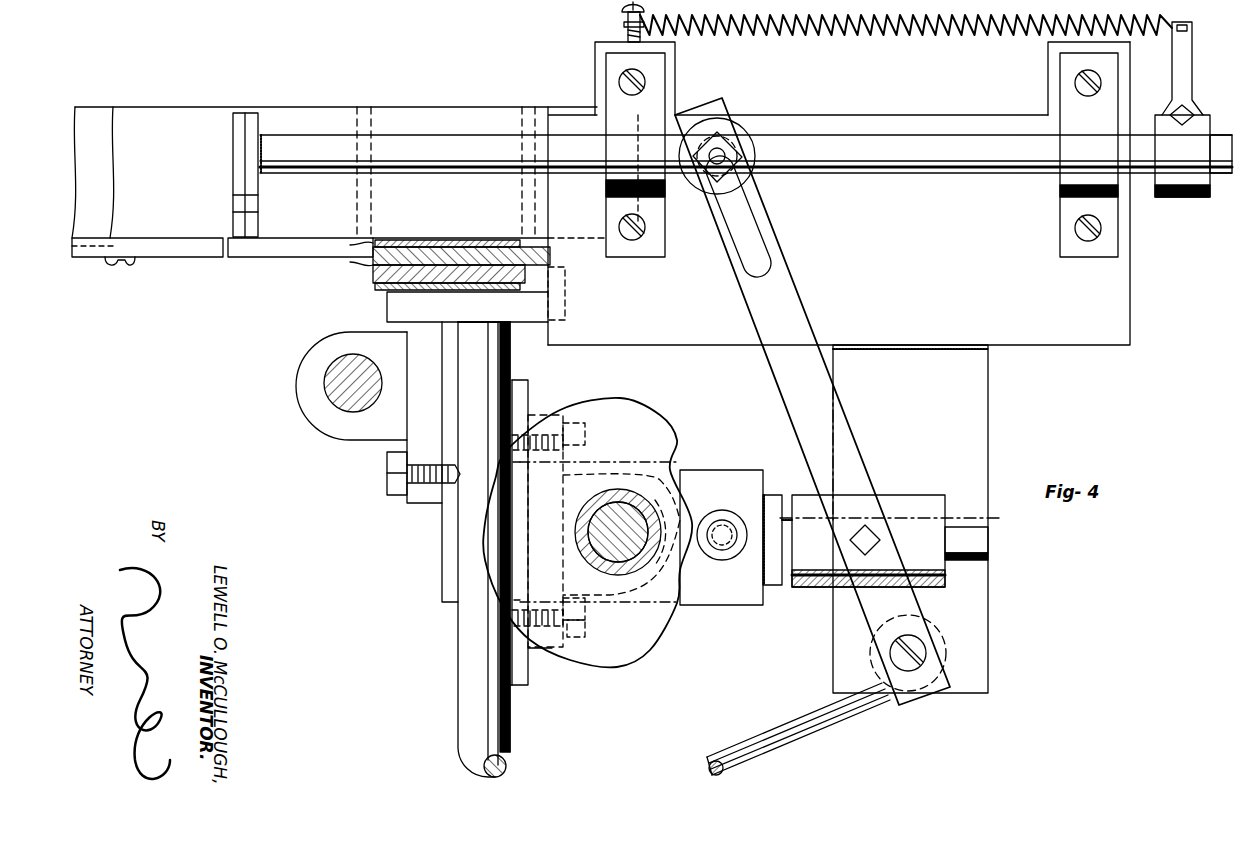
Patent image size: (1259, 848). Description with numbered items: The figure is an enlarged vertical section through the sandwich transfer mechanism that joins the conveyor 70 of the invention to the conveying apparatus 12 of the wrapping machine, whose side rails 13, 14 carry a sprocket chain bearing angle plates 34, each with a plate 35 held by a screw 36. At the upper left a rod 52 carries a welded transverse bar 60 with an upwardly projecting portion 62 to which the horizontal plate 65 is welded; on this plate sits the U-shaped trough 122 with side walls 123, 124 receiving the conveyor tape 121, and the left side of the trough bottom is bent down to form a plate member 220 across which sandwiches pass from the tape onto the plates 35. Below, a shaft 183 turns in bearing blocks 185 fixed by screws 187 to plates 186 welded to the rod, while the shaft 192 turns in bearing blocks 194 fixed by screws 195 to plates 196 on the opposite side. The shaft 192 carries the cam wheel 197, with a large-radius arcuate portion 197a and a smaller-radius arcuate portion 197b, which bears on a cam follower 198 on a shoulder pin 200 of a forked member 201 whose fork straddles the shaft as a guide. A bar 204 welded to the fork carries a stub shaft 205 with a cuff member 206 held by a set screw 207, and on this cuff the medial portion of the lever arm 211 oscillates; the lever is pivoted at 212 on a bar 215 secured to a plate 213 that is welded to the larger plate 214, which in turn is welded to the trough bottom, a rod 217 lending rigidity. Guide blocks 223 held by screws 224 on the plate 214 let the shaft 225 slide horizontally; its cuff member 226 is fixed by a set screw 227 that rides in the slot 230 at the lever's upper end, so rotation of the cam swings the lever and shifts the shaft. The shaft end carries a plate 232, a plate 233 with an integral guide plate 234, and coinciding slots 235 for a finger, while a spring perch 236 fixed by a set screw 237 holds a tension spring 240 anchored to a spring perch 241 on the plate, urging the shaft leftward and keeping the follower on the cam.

The conveying apparatus 12 is at (128, 107).
The side rail 13 is at (88, 110).
The side rail 14 is at (176, 110).
The angle plate 34 is at (196, 258).
The plate 35 is at (159, 246).
The screw 36 is at (130, 257).
The rod 52 is at (510, 730).
The transverse bar 60 is at (528, 324).
The upwardly projecting portion 62 is at (562, 290).
The plate 65 is at (372, 268).
The conveyor 70 is at (530, 107).
The conveyor tape 121 is at (412, 244).
The trough 122 is at (482, 247).
The side wall 123 is at (364, 107).
The side wall 124 is at (548, 112).
The shaft 183 is at (324, 384).
The bearing block 185 is at (343, 441).
The plate 186 is at (441, 560).
The screw 187 is at (390, 484).
The shaft 192 is at (632, 568).
The bearing block 194 is at (530, 657).
The screw 195 is at (586, 440).
The plate 196 is at (524, 386).
The cam wheel 197 is at (646, 403).
The arcuate portion 197a is at (582, 404).
The arcuate portion 197b is at (672, 496).
The cam follower 198 is at (722, 562).
The shoulder pin 200 is at (722, 520).
The forked member 201 is at (744, 470).
The bar 204 is at (770, 587).
The stub shaft 205 is at (963, 527).
The cuff member 206 is at (918, 504).
The set screw 207 is at (863, 526).
The lever arm 211 is at (805, 322).
The pivot 212 is at (890, 653).
The plate 213 is at (988, 656).
The plate 214 is at (1130, 321).
The bar 215 is at (933, 634).
The rod 217 is at (784, 738).
The plate member 220 is at (258, 257).
The guide block 223 is at (665, 256).
The screw 224 is at (645, 82).
The shaft 225 is at (905, 174).
The cuff member 226 is at (738, 132).
The set screw 227 is at (706, 175).
The slot 230 is at (762, 246).
The plate 232 is at (254, 115).
The plate 233 is at (241, 113).
The guide plate 234 is at (432, 112).
The slot 235 is at (233, 195).
The spring perch 236 is at (1206, 126).
The set screw 237 is at (1182, 125).
The tension spring 240 is at (992, 36).
The spring perch 241 is at (622, 8).